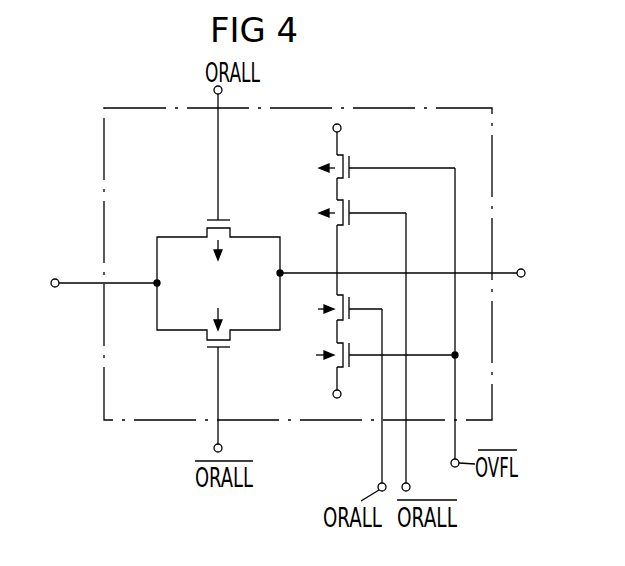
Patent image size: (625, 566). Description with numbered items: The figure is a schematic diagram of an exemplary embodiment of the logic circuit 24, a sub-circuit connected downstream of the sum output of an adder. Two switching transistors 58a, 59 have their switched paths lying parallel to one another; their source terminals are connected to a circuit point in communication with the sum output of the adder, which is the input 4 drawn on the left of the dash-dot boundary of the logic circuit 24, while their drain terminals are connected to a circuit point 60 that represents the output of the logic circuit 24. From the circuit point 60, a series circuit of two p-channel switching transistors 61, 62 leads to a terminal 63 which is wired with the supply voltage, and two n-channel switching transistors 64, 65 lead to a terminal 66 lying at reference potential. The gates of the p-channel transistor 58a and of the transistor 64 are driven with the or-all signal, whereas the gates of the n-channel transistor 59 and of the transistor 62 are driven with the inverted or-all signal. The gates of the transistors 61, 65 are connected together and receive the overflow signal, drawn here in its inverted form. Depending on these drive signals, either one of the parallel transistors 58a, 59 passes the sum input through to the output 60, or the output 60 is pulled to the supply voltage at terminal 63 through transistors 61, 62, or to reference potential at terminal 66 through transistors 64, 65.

The logic circuit 24 is at (398, 108).
The input terminal 4 is at (96, 282).
The p-channel switching transistor 58a is at (236, 177).
The n-channel switching transistor 59 is at (231, 380).
The circuit point 60 is at (415, 274).
The p-channel switching transistor 61 is at (387, 178).
The p-channel switching transistor 62 is at (362, 223).
The terminal 63 is at (351, 137).
The n-channel switching transistor 64 is at (350, 298).
The n-channel switching transistor 65 is at (387, 345).
The terminal 66 is at (350, 387).